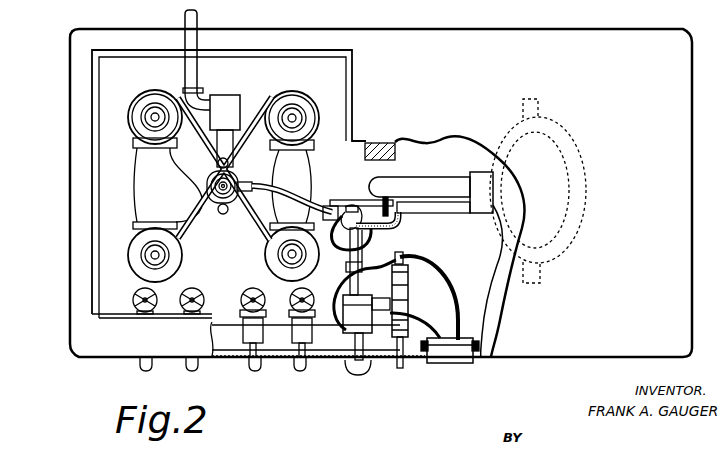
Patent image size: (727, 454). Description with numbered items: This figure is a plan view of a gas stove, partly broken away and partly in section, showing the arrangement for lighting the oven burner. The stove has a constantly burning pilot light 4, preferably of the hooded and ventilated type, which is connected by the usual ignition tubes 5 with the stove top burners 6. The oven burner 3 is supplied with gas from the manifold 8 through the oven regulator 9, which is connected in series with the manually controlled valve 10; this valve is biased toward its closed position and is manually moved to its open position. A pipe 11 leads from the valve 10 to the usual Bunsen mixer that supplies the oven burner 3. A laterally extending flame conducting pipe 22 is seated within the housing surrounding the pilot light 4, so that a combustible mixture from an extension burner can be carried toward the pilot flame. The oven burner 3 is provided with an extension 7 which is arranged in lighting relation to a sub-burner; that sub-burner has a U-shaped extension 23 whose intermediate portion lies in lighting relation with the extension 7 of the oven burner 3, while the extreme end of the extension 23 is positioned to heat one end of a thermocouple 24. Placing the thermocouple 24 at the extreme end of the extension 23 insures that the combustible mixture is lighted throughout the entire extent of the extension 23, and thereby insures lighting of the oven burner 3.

The oven burner 3 is at (495, 238).
The pilot light 4 is at (212, 188).
The ignition tubes 5 is at (250, 114).
The stove top burners 6 is at (302, 107).
The extension of the oven burner 7 is at (444, 216).
The manifold 8 is at (327, 335).
The oven regulator 9 is at (368, 374).
The manually controlled valve 10 is at (408, 306).
The pipe 11 is at (375, 247).
The flame conducting pipe 22 is at (267, 182).
The U-shaped extension of the sub-burner 23 is at (407, 190).
The thermocouple 24 is at (356, 201).